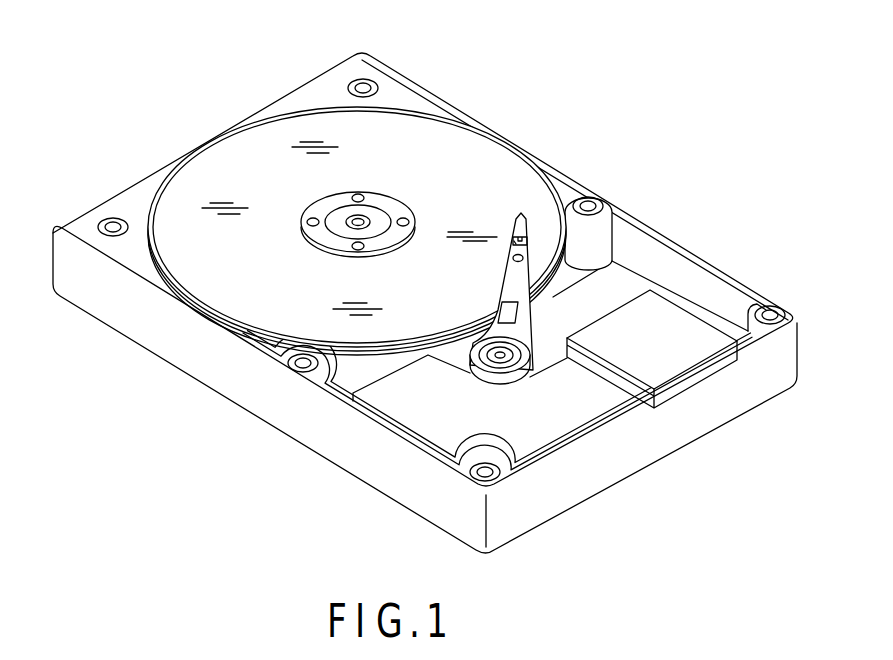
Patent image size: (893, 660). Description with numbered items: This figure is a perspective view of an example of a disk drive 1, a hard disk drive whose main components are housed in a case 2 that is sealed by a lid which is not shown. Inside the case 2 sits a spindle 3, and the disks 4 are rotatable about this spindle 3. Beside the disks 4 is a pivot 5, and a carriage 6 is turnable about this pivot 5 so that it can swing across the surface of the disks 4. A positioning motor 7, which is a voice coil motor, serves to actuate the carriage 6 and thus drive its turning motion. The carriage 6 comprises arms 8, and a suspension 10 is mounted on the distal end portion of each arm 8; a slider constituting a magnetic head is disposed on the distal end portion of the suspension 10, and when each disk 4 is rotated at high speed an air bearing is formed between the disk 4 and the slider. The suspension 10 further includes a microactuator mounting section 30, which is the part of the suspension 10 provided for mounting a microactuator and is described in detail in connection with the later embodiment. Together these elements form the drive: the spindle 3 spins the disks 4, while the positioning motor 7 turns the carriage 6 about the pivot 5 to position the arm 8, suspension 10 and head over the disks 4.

The disk drive 1 is at (694, 135).
The case 2 is at (235, 392).
The spindle 3 is at (373, 212).
The disks 4 is at (466, 160).
The pivot 5 is at (510, 363).
The carriage 6 is at (518, 329).
The positioning motor 7 is at (428, 428).
The arm 8 is at (533, 247).
The suspension 10 is at (520, 217).
The microactuator mounting section 30 is at (515, 240).